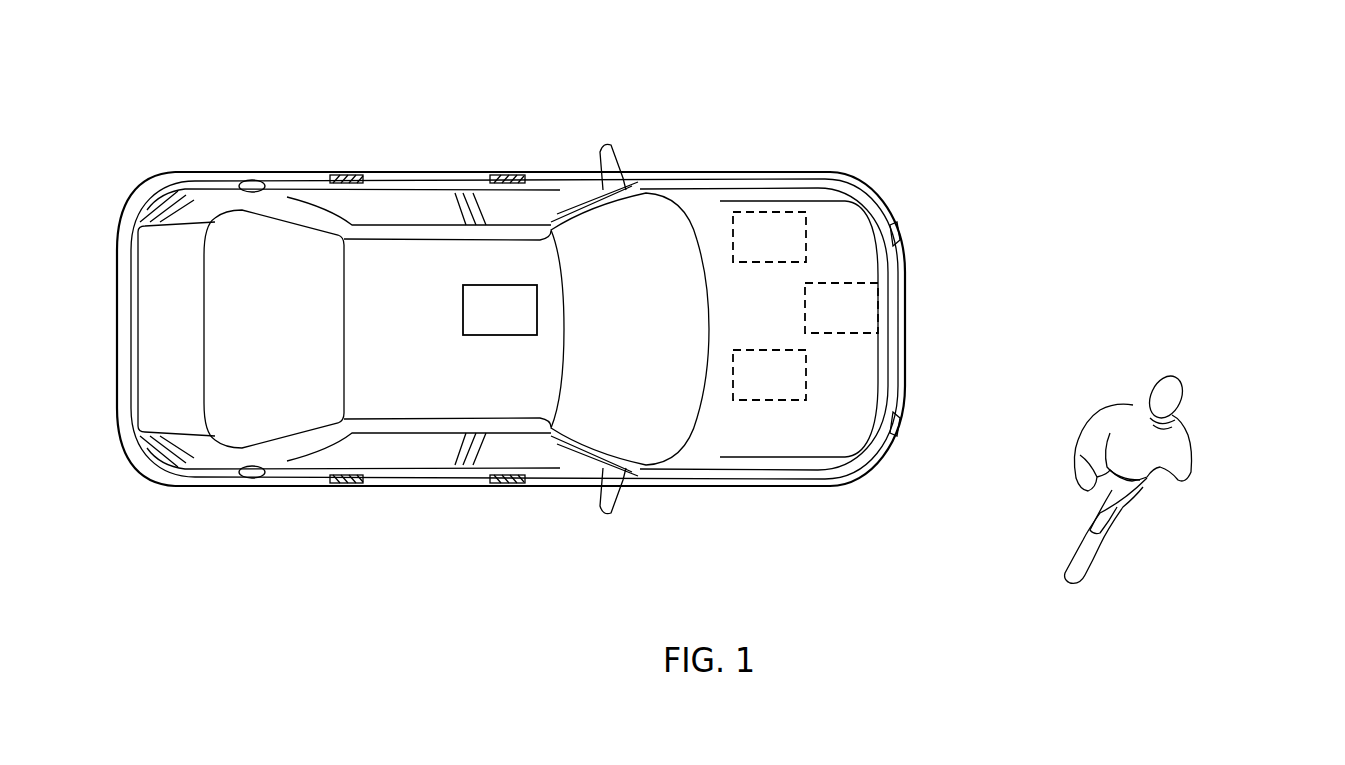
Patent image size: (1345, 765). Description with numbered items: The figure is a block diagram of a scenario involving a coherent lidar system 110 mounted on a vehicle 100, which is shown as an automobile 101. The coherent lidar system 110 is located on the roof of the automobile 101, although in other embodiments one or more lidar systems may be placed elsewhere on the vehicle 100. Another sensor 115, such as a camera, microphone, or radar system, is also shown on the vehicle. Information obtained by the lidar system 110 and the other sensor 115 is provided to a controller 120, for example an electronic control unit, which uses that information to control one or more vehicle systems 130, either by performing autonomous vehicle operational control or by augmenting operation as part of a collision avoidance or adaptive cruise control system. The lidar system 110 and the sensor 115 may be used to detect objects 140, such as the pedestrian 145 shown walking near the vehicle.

The vehicle 100 is at (511, 291).
The automobile 101 is at (511, 328).
The coherent lidar system 110 is at (523, 326).
The sensor 115 is at (864, 326).
The controller 120 is at (792, 253).
The vehicle systems 130 is at (792, 392).
The objects 140 is at (1194, 456).
The pedestrian 145 is at (1208, 383).